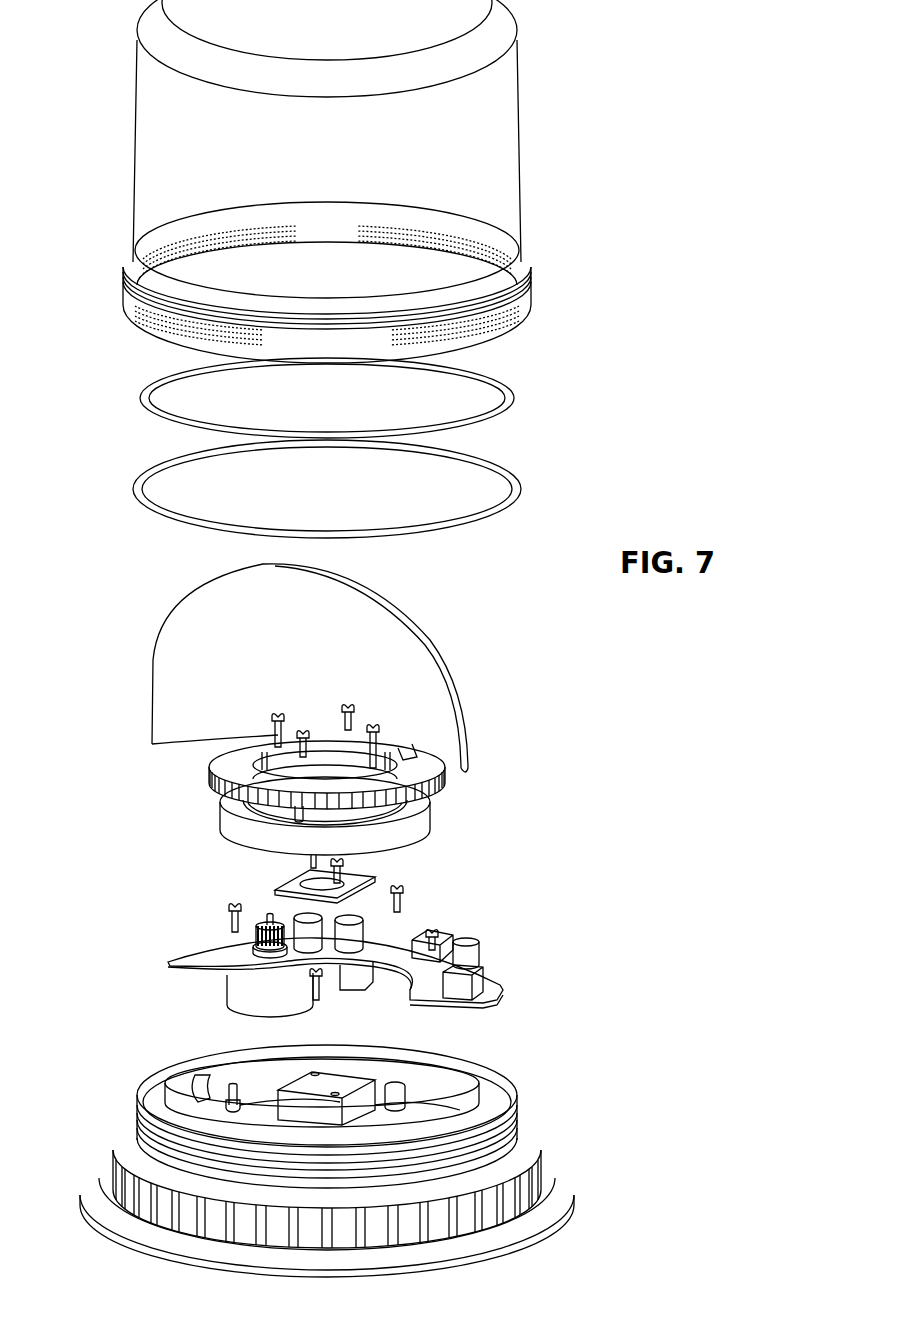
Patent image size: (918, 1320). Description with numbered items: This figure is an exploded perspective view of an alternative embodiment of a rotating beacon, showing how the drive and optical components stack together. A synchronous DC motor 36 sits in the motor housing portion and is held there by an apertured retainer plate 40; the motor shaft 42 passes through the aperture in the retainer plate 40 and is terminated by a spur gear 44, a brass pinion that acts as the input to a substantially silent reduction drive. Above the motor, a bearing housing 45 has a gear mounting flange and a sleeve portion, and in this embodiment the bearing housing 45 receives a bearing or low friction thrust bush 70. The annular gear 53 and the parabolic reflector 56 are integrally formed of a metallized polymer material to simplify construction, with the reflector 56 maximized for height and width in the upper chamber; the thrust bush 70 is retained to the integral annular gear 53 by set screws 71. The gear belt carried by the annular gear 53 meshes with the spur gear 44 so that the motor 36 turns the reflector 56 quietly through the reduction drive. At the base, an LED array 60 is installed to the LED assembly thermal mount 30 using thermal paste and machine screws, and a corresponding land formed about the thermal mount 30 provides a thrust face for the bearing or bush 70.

The LED assembly thermal mount 30 is at (345, 1083).
The synchronous DC motor 36 is at (240, 997).
The retainer plate 40 is at (257, 947).
The motor shaft 42 is at (268, 920).
The spur gear 44 is at (263, 927).
The bearing housing 45 is at (380, 810).
The annular gear 53 is at (413, 767).
The parabolic reflector 56 is at (382, 660).
The LED array 60 is at (350, 878).
The low friction thrust bush 70 is at (400, 837).
The set screws 71 is at (378, 725).